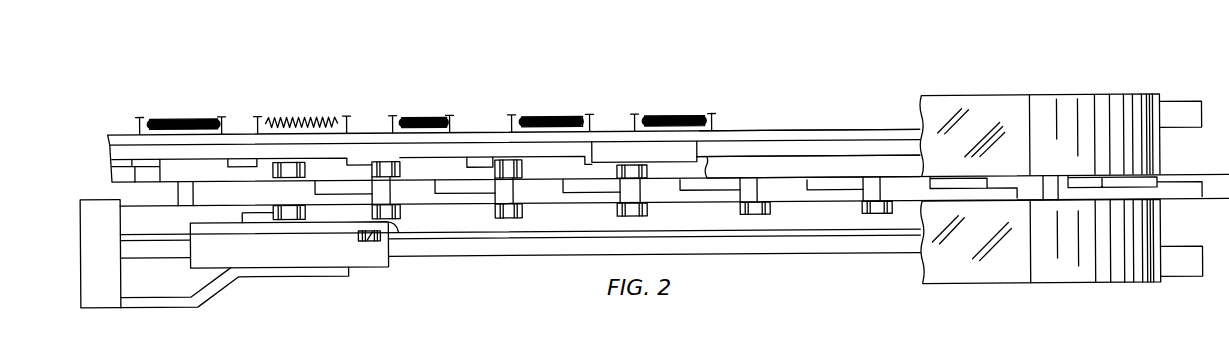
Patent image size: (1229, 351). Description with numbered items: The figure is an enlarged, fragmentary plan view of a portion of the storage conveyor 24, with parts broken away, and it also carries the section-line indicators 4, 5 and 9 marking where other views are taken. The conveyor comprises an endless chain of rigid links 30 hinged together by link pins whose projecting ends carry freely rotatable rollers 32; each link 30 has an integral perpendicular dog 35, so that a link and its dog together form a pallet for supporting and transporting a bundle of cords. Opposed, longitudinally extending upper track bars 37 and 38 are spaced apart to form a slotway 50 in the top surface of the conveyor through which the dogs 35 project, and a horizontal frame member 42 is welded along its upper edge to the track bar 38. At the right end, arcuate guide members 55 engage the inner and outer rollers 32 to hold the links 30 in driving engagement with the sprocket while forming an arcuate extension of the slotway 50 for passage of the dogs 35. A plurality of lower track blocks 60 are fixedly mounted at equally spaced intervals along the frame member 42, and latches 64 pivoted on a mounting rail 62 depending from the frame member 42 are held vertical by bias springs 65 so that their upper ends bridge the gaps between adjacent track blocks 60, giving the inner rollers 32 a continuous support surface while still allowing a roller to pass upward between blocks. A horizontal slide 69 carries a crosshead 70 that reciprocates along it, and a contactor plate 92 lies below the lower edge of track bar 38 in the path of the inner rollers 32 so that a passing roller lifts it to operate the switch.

The section line 4- 4 is at (402, 155).
The section line 5- 5 is at (1183, 148).
The section line 9- 9 is at (1098, 94).
The storage conveyor 24 is at (796, 100).
The rigid links 30 is at (820, 200).
The rollers 32 is at (740, 209).
The perpendicular dog 35 is at (495, 200).
The upper track bar 37 is at (840, 229).
The upper track bar 38 is at (913, 175).
The frame member 42 is at (778, 147).
The slotway 50 is at (770, 184).
The arcuate guide members 55 is at (1083, 285).
The lower track blocks 60 is at (225, 177).
The mounting rail 62 is at (856, 132).
The latches 64 is at (478, 162).
The bias springs 65 is at (407, 118).
The horizontal slide 69 is at (493, 254).
The crosshead 70 is at (390, 262).
The contactor plate 92 is at (613, 148).